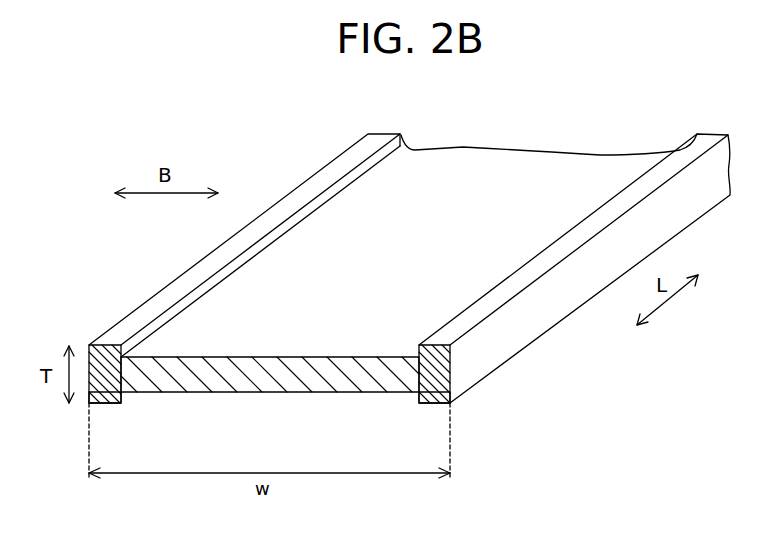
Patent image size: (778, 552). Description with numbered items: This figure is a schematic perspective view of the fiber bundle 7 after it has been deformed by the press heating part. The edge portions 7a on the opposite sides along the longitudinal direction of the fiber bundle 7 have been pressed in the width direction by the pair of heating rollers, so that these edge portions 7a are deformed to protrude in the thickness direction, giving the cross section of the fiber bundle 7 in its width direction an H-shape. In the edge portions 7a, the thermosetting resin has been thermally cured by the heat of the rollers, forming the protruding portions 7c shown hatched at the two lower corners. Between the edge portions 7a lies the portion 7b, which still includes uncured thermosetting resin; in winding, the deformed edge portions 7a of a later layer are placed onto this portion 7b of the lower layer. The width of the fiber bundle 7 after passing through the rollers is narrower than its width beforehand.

The fiber bundle 7 is at (521, 175).
The edge portion 7a is at (175, 278).
The portion including uncured thermosetting resin 7b is at (270, 383).
The protruding portion 7c is at (105, 393).